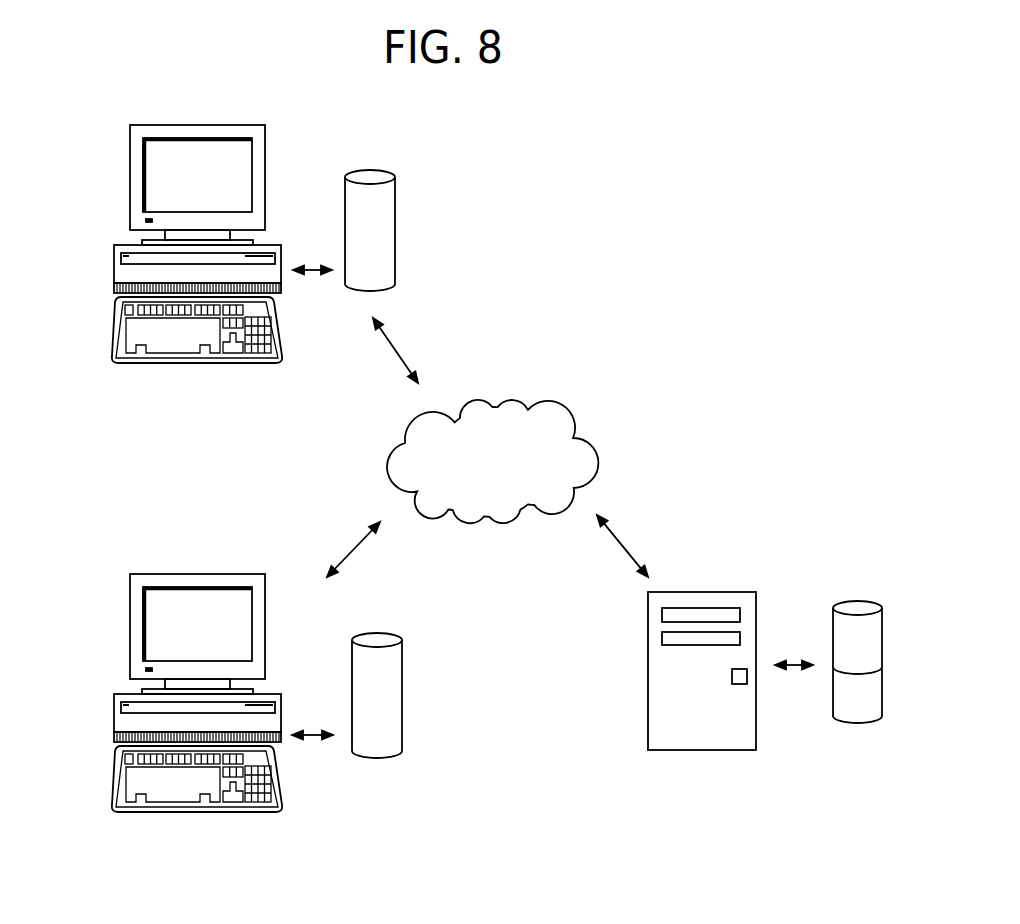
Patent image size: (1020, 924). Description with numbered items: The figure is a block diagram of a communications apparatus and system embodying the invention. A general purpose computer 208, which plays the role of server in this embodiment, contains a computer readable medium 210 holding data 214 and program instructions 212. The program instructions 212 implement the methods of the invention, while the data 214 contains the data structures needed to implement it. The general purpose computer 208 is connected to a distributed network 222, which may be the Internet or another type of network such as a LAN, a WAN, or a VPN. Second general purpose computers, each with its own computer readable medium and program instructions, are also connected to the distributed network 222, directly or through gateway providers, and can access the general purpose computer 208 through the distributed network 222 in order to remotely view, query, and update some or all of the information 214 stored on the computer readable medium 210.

The general purpose computer 208 is at (648, 690).
The computer readable medium 210 is at (833, 654).
The program instructions 212 is at (838, 703).
The data 214 is at (838, 645).
The distributed network 222 is at (546, 400).